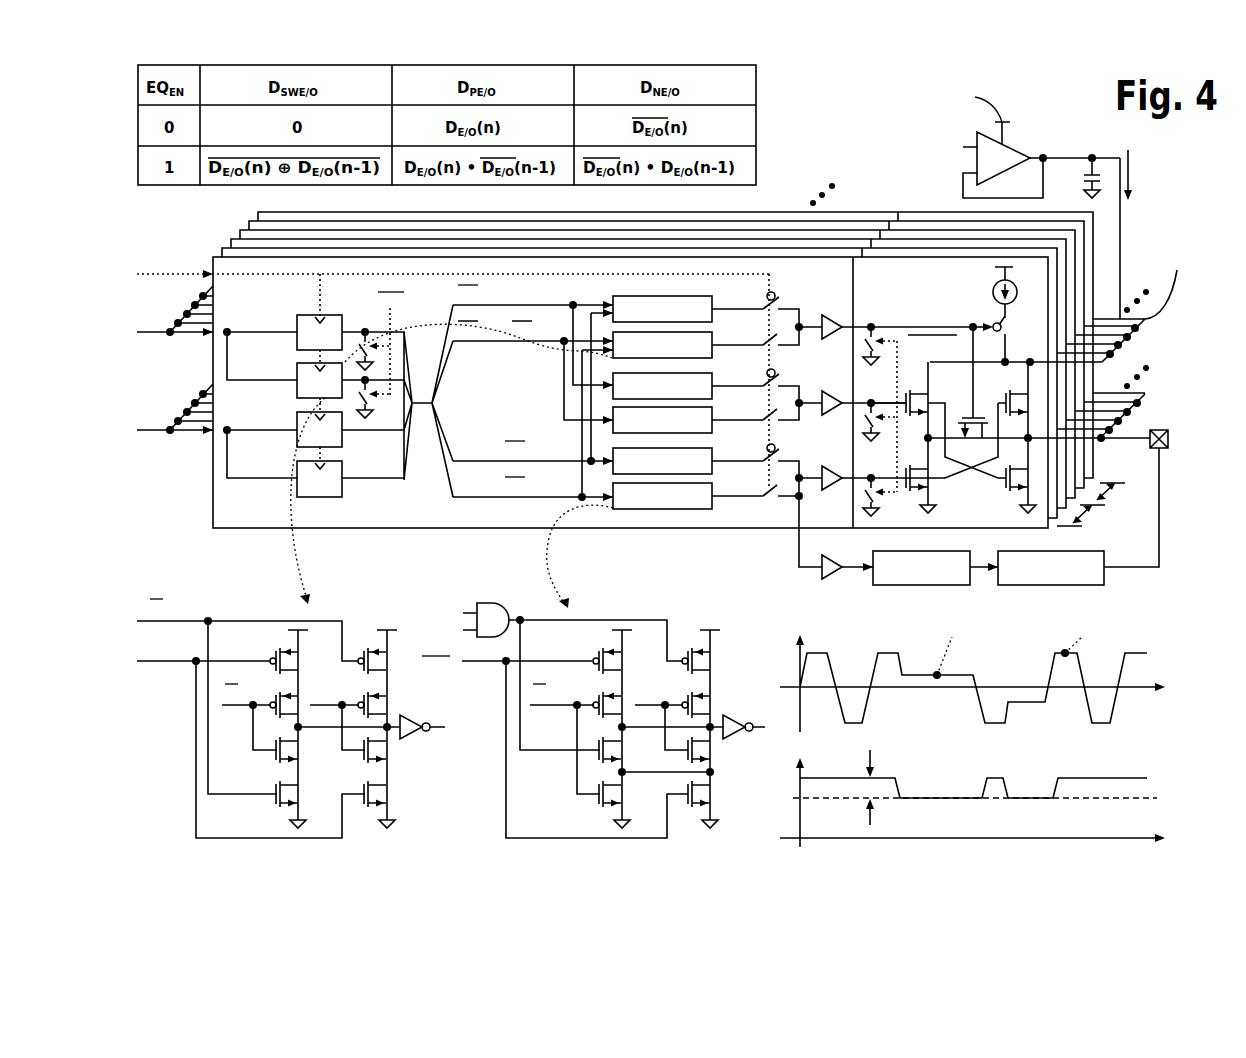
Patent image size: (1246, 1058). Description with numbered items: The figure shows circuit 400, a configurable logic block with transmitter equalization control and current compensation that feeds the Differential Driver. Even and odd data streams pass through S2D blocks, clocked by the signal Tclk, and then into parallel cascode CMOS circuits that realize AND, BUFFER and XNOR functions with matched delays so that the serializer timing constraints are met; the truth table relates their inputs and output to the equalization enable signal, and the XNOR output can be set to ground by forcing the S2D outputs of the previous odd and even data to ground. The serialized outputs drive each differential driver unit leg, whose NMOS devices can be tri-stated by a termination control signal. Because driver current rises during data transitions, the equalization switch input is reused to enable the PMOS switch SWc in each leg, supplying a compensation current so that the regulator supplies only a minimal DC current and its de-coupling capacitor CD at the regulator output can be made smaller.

The circuit 400 is at (866, 76).
The element S2D is at (319, 385).
The PMOS switch SWc is at (1007, 314).
The de-coupling capacitor CD is at (1080, 178).
The clock signal line Tclk is at (453, 370).